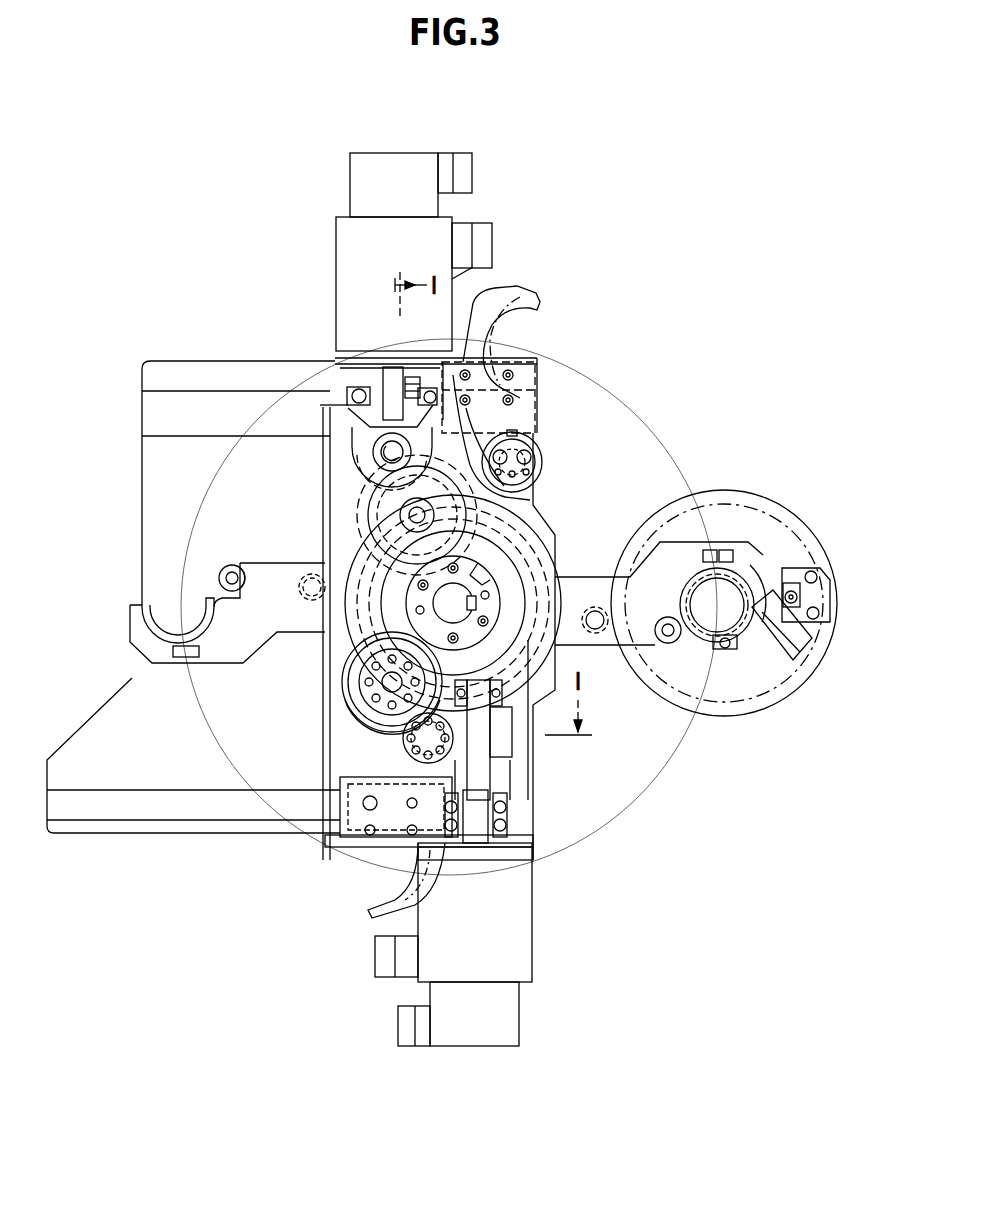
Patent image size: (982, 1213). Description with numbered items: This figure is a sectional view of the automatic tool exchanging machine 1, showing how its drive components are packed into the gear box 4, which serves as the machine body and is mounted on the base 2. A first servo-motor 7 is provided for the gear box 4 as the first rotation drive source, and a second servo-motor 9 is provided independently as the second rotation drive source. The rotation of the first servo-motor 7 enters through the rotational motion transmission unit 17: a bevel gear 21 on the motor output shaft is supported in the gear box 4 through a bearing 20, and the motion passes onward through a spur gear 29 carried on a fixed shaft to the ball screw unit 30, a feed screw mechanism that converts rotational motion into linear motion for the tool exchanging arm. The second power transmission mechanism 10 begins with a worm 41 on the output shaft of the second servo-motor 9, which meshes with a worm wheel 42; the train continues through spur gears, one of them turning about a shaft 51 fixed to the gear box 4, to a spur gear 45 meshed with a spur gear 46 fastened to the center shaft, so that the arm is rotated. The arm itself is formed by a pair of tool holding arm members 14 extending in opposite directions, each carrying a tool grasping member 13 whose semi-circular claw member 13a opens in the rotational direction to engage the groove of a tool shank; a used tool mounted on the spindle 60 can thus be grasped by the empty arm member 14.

The automatic tool exchanging machine 1 is at (680, 229).
The base 2 is at (192, 360).
The gear box 4 is at (553, 530).
The first servo-motor 7 is at (473, 157).
The second servo-motor 9 is at (533, 918).
The second power transmission mechanism 10 is at (323, 787).
The tool grasping member 13 is at (163, 612).
The claw member 13a is at (208, 620).
The tool holding arm member 14 is at (272, 612).
The rotational motion transmission unit 17 is at (532, 505).
The bearing 20 is at (355, 388).
The bevel gear 21 is at (343, 447).
The spur gear 29 is at (412, 515).
The ball screw unit 30 is at (540, 560).
The worm 41 is at (502, 747).
The worm wheel 42 is at (402, 745).
The spur gear 45 is at (370, 685).
The spur gear 46 is at (345, 655).
The shaft 51 is at (372, 720).
The spindle 60 is at (777, 500).